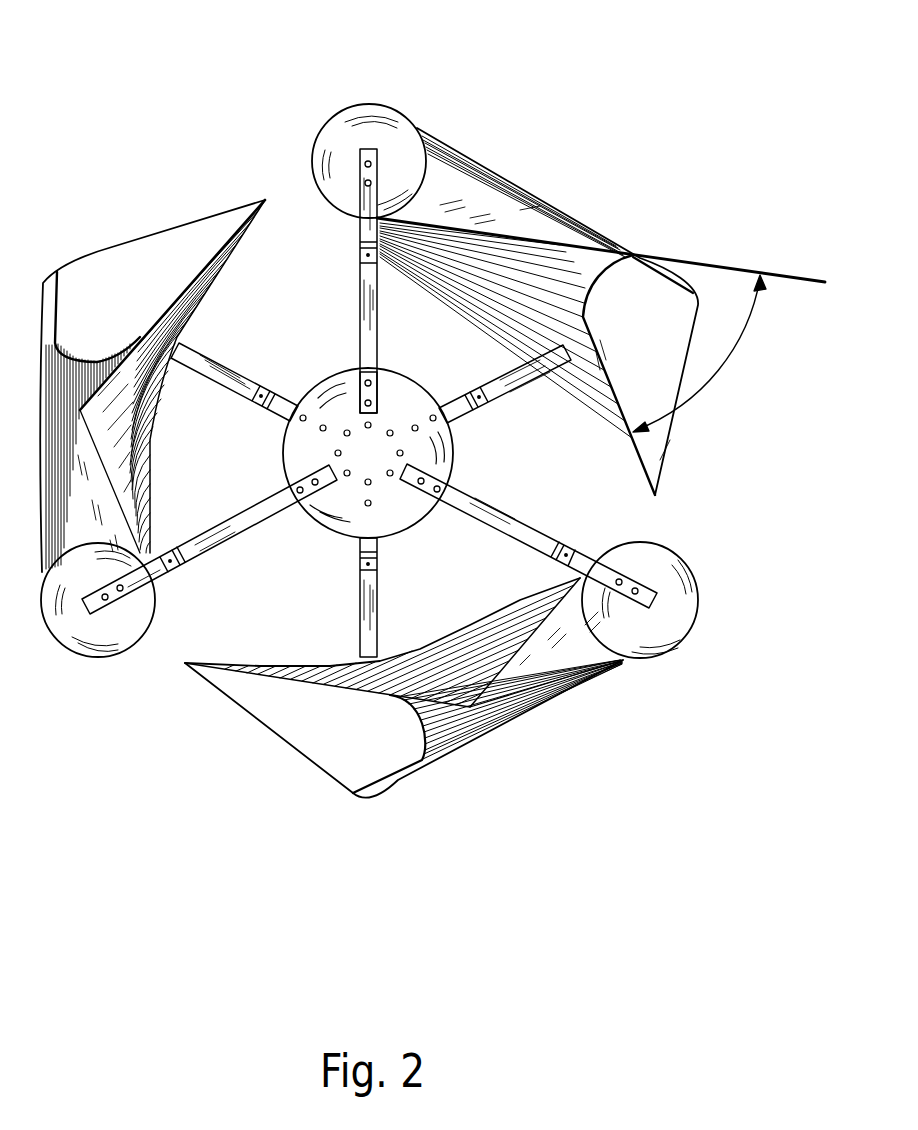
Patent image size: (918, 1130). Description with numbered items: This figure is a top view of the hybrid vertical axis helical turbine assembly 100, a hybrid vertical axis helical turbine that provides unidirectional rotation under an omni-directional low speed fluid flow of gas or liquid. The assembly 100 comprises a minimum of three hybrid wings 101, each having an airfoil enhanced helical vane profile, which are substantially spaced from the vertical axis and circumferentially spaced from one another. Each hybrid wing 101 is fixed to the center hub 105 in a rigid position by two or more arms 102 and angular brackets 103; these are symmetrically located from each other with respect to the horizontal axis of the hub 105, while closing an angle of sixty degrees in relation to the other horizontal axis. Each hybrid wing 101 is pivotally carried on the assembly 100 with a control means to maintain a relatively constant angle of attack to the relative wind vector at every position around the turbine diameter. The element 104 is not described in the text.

The hybrid vertical axis helical turbine assembly 100 is at (537, 99).
The hybrid wing 101 is at (603, 683).
The arm 102 is at (493, 505).
The angular bracket 103 is at (355, 372).
The spherical end mass / node 104 is at (360, 100).
The center hub 105 is at (412, 377).